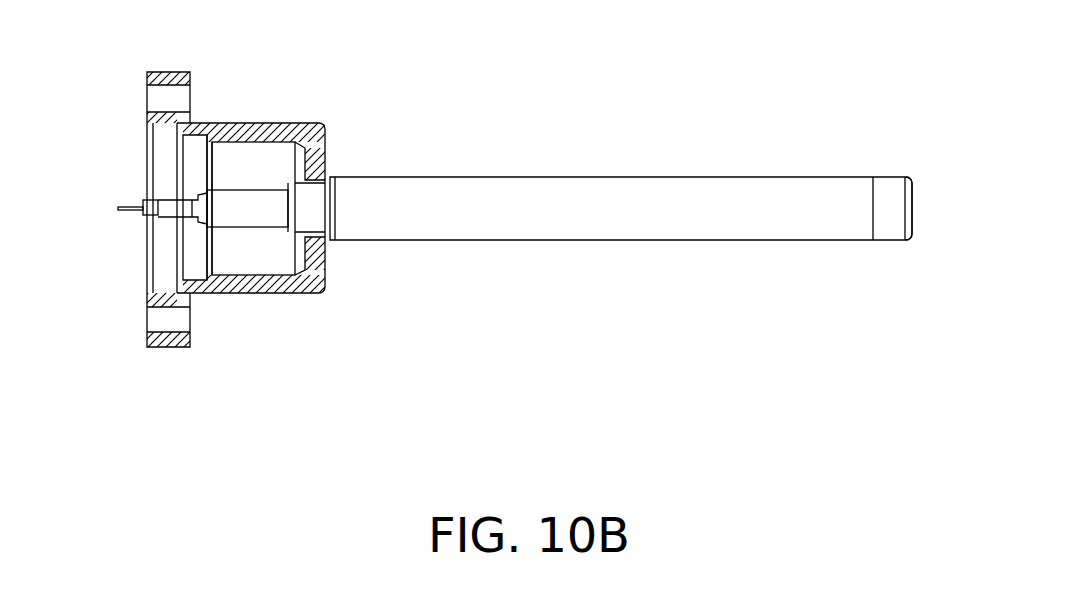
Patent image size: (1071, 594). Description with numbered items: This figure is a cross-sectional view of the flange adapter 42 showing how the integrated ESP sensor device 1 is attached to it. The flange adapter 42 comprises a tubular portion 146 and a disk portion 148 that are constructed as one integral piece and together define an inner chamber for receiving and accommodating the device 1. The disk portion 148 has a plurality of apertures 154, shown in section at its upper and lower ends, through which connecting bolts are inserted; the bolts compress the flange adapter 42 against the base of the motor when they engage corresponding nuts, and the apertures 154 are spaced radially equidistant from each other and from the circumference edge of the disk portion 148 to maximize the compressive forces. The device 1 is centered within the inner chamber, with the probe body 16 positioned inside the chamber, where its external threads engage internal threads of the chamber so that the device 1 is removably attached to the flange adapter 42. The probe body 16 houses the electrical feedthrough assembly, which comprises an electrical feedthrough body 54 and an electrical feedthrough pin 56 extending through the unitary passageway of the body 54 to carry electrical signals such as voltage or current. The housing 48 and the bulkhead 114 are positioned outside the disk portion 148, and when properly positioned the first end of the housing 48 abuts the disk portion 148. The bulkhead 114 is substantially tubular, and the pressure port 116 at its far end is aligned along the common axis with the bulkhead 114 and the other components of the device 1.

The device 1 is at (597, 132).
The probe body 16 is at (250, 213).
The flange adapter 42 is at (260, 110).
The housing 48 is at (583, 218).
The electrical feedthrough body 54 is at (165, 213).
The electrical feedthrough pin 56 is at (117, 208).
The bulkhead 114 is at (884, 222).
The pressure port 116 is at (905, 203).
The tubular portion 146 is at (167, 348).
The disk portion 148 is at (253, 285).
The apertures 154 is at (163, 96).